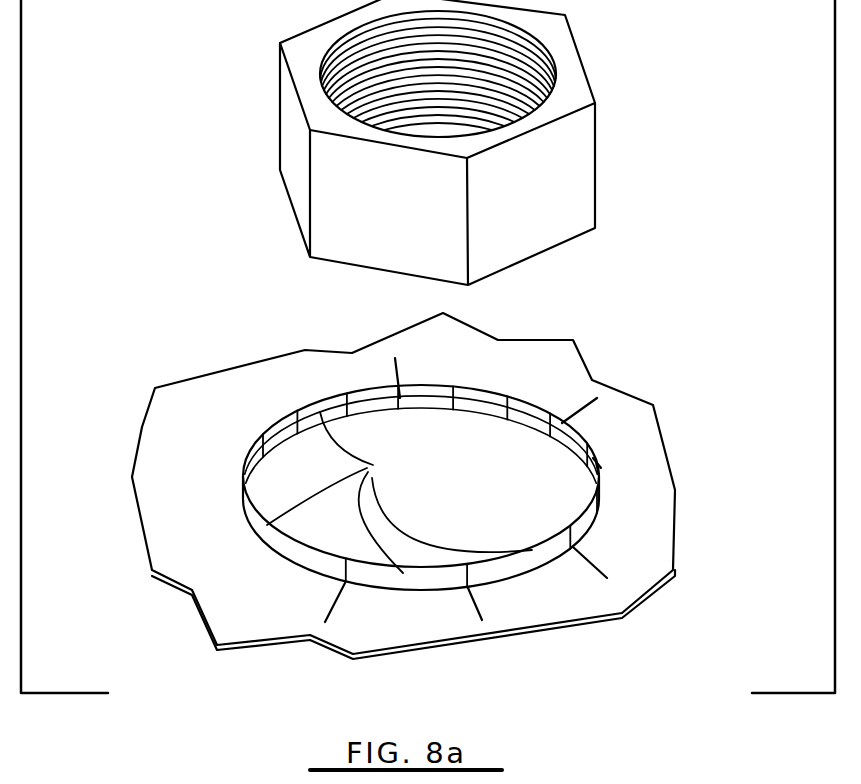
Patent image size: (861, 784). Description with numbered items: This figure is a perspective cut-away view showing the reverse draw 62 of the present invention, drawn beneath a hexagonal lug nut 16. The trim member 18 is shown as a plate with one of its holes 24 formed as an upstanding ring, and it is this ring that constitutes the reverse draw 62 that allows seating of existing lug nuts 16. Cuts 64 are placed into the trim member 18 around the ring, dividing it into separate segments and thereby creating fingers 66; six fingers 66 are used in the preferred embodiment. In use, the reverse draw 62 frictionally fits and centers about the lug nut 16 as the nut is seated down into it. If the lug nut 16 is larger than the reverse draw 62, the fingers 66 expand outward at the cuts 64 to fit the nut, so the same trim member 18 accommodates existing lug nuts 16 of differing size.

The lug nut 16 is at (585, 62).
The trim member 18 is at (203, 378).
The holes 24 is at (592, 502).
The reverse draw 62 is at (607, 462).
The cuts 64 is at (246, 437).
The fingers 66 is at (685, 367).